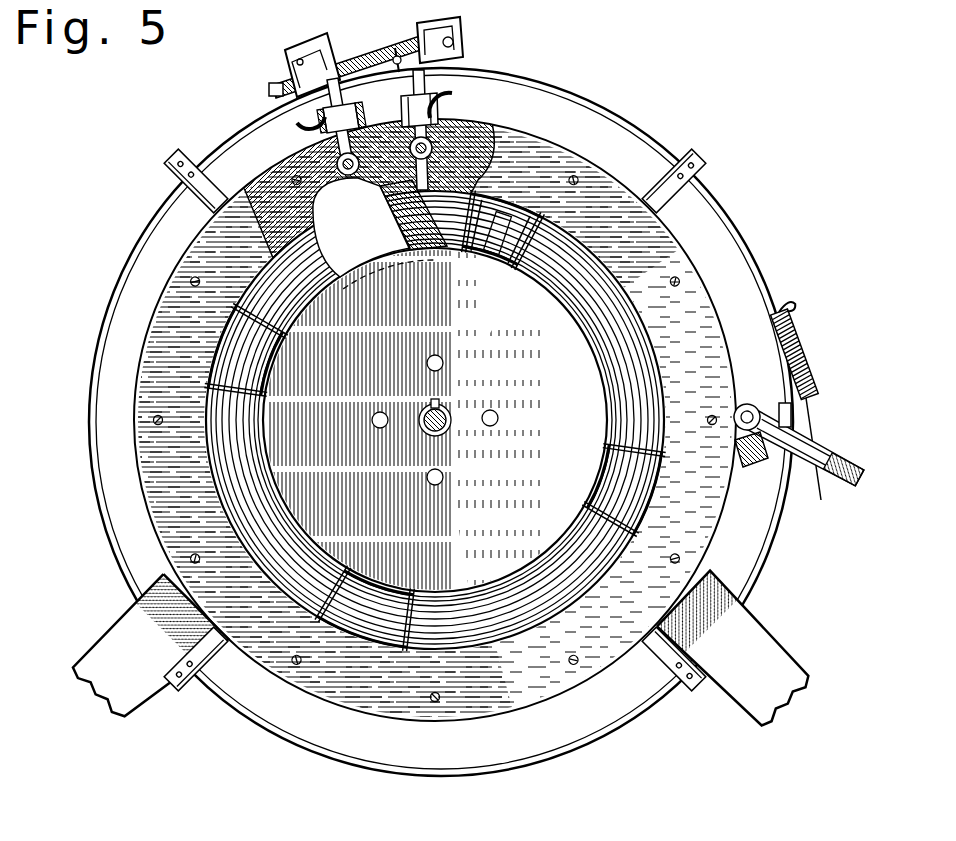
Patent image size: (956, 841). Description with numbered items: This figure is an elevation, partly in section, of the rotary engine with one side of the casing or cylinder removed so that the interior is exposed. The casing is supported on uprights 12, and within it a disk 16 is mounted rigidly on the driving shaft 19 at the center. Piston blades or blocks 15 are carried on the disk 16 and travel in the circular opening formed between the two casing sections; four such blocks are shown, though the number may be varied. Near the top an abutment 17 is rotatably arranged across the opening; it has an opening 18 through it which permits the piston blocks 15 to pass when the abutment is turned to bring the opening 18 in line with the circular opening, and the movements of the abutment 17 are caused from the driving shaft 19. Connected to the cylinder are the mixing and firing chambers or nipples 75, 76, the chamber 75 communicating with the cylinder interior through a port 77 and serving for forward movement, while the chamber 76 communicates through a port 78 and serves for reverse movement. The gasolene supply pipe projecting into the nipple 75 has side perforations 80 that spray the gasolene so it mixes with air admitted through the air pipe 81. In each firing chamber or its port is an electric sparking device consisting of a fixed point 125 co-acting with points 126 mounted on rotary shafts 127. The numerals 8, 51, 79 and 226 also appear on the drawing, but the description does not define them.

The lever arm 8 is at (740, 413).
The uprights 12 is at (130, 708).
The piston blades or blocks 15 is at (515, 262).
The disk 16 is at (435, 421).
The abutment 17 is at (383, 228).
The opening 18 is at (338, 200).
The driving shaft 19 is at (445, 414).
The spring 51 is at (782, 350).
The mixing and firing chamber 75 is at (404, 110).
The mixing and firing chamber 76 is at (344, 128).
The port 77 is at (369, 185).
The port 78 is at (297, 121).
The lever bar 79 is at (455, 41).
The side perforations 80 is at (405, 88).
The air pipe 81 is at (435, 95).
The fixed point 125 is at (442, 116).
The points 126 is at (340, 166).
The rotary shafts 127 is at (460, 203).
The clamp block 226 is at (462, 233).